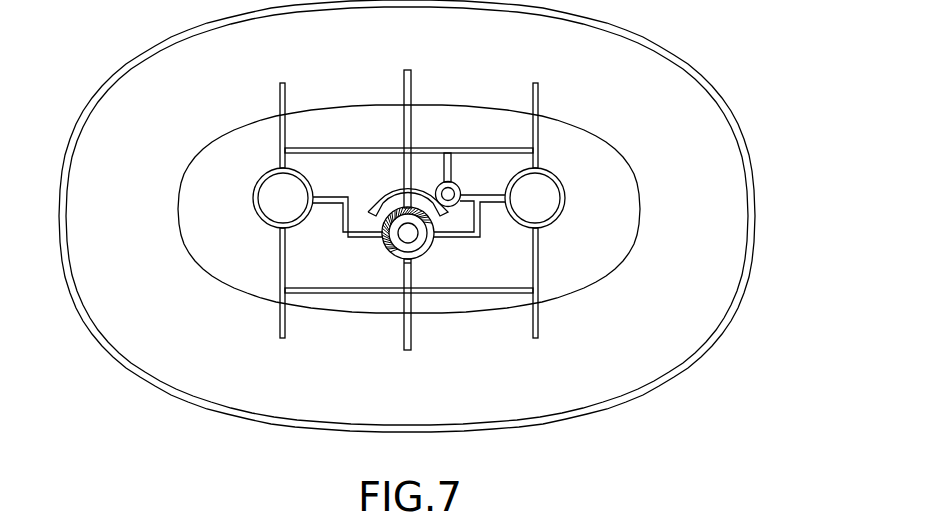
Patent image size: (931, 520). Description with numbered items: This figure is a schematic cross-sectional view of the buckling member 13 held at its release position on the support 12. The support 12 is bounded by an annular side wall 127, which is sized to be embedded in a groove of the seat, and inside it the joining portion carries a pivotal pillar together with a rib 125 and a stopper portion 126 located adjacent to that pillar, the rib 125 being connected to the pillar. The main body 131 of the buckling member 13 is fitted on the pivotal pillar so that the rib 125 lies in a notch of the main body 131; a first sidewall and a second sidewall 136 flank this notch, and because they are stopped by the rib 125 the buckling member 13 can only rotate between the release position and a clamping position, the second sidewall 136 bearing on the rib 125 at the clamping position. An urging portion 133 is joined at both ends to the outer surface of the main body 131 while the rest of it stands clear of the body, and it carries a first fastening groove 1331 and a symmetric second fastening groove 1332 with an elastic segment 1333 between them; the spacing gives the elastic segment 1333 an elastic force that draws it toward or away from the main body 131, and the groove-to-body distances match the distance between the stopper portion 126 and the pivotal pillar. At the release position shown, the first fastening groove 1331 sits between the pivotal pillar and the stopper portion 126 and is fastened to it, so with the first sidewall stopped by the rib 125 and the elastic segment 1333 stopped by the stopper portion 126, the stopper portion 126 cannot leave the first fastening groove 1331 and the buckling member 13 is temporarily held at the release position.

The support 12 is at (714, 64).
The side wall 127 is at (667, 372).
The buckling member 13 is at (378, 252).
The main body 131 is at (397, 254).
The urging portion 133 is at (330, 143).
The first fastening groove 1331 is at (447, 181).
The second fastening groove 1332 is at (383, 205).
The elastic segment 1333 is at (403, 186).
The rib 125 is at (417, 262).
The stopper portion 126 is at (460, 184).
The second sidewall 136 is at (434, 240).